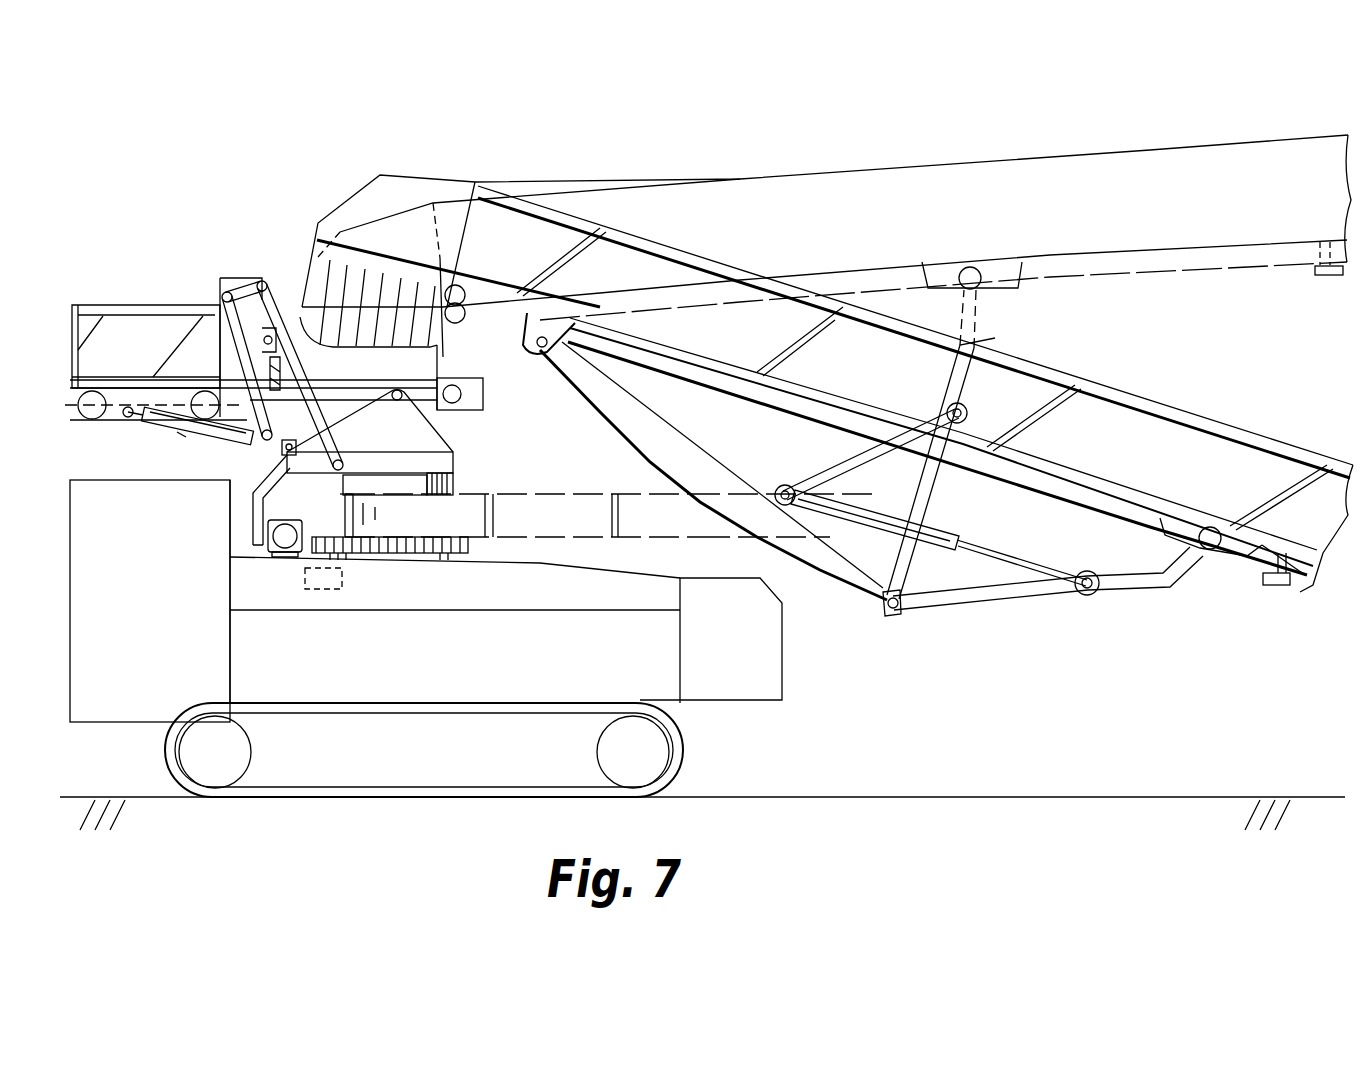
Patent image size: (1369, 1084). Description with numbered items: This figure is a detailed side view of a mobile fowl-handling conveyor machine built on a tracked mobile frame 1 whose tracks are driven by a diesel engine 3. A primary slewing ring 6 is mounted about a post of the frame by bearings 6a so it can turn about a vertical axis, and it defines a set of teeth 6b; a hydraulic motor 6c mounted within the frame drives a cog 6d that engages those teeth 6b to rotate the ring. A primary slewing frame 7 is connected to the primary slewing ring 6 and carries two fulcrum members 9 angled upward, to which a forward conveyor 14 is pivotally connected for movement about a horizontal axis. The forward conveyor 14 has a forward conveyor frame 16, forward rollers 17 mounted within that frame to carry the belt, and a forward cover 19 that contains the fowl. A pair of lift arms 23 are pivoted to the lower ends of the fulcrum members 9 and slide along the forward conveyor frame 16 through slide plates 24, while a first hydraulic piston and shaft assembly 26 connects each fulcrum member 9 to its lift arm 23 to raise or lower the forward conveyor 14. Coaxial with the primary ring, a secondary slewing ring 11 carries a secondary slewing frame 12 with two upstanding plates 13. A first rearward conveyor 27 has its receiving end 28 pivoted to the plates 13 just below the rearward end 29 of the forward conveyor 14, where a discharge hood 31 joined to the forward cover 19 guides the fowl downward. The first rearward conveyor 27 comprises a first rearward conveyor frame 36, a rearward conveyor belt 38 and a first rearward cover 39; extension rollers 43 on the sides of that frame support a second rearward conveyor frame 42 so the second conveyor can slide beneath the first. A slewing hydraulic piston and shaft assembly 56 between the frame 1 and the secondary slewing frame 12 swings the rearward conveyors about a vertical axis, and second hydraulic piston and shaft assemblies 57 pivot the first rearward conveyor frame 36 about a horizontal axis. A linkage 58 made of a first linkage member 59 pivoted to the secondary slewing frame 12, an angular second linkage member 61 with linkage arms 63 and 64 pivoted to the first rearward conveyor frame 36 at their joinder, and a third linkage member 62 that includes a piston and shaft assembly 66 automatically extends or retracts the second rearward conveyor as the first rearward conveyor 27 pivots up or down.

The mobile frame 1 is at (762, 706).
The diesel engine 3 is at (108, 728).
The primary slewing ring 6 is at (410, 557).
The bearings 6a is at (378, 553).
The teeth 6b is at (468, 553).
The hydraulic motor 6c is at (305, 589).
The cog 6d is at (340, 494).
The primary slewing frame 7 is at (758, 555).
The fulcrum members 9 is at (716, 458).
The secondary slewing ring 11 is at (455, 483).
The secondary slewing frame 12 is at (457, 451).
The plates 13 is at (466, 442).
The forward conveyor 14 is at (870, 163).
The forward conveyor frame 16 is at (1178, 404).
The forward rollers 17 is at (464, 292).
The forward cover 19 is at (1222, 452).
The lift arms 23 is at (995, 338).
The slide plate 24 is at (990, 287).
The first hydraulic piston and shaft assembly 26 is at (845, 472).
The first rearward conveyor 27 is at (166, 305).
The receiving end 28 is at (444, 372).
The rearward end 29 is at (478, 183).
The discharge hood 31 is at (402, 170).
The first rearward conveyor frame 36 is at (138, 305).
The rearward conveyor belt 38 is at (330, 388).
The first rearward cover 39 is at (105, 330).
The second rearward conveyor frame 42 is at (73, 420).
The extension rollers 43 is at (104, 414).
The slewing hydraulic piston and shaft assembly 56 is at (291, 528).
The second hydraulic piston and shaft assemblies 57 is at (290, 420).
The linkage 58 is at (270, 288).
The first linkage member 59 is at (292, 300).
The second linkage member 61 is at (229, 298).
The third linkage member 62 is at (186, 438).
The first linkage arm 63 is at (243, 290).
The second linkage arm 64 is at (262, 340).
The piston and shaft assembly 66 is at (177, 433).